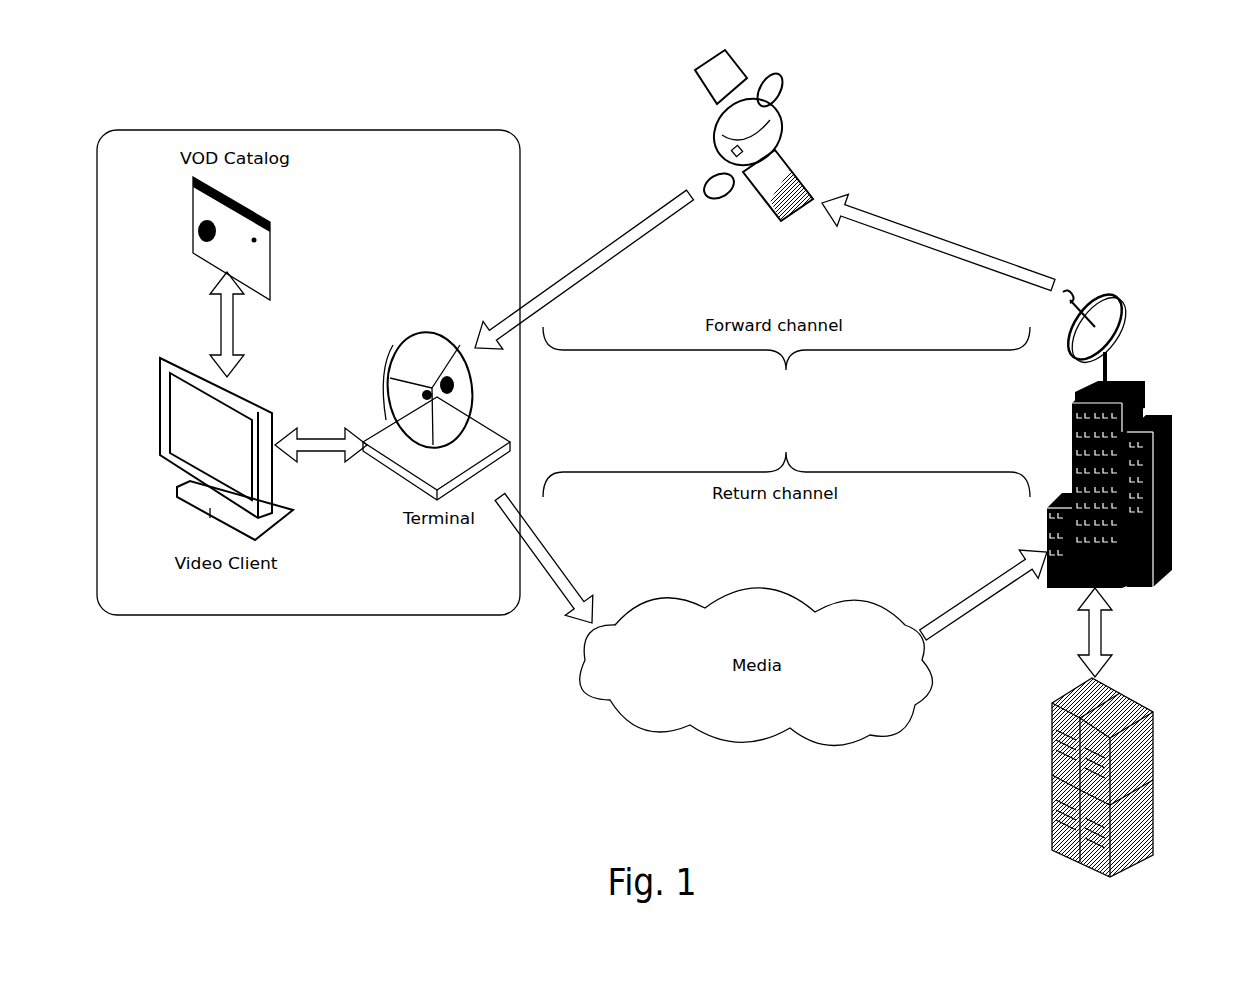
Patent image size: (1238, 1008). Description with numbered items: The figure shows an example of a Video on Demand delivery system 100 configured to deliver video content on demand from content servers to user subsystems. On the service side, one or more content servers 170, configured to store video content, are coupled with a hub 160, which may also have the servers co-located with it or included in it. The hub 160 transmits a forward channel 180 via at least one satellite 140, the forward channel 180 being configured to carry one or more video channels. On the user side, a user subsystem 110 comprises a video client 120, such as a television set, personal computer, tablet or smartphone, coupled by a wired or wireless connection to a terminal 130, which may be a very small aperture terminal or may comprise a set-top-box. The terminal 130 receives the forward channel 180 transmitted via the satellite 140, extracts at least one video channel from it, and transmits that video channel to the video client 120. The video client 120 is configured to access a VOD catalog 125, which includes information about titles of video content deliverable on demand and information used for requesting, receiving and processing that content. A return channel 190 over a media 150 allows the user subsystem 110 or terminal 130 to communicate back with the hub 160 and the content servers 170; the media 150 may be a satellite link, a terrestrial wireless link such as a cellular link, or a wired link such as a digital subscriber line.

The system 100 is at (1178, 98).
The user subsystem 110 is at (104, 125).
The video client 120 is at (158, 355).
The VOD catalog 125 is at (187, 208).
The terminal 130 is at (424, 323).
The satellite 140 is at (796, 109).
The media 150 is at (583, 693).
The hub 160 is at (1167, 581).
The content servers 170 is at (1156, 851).
The forward channel 180 is at (786, 359).
The return channel 190 is at (786, 463).